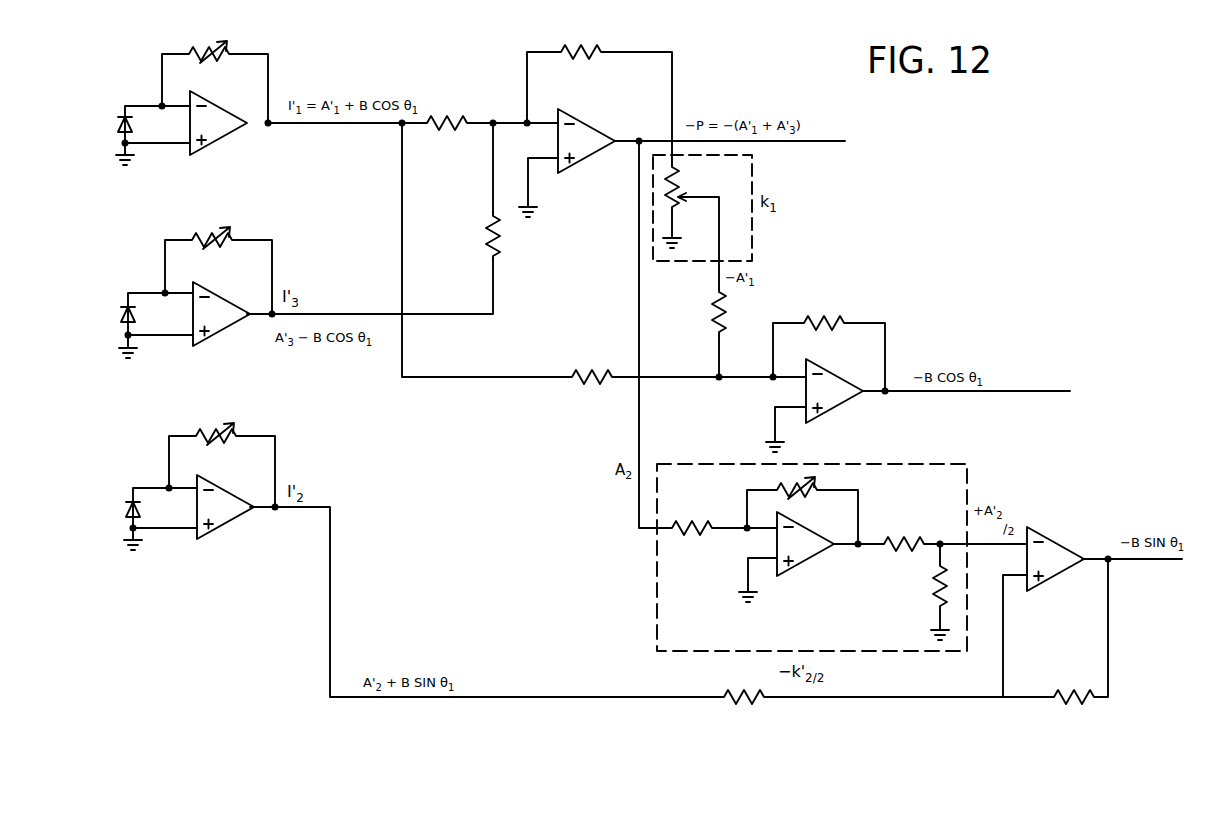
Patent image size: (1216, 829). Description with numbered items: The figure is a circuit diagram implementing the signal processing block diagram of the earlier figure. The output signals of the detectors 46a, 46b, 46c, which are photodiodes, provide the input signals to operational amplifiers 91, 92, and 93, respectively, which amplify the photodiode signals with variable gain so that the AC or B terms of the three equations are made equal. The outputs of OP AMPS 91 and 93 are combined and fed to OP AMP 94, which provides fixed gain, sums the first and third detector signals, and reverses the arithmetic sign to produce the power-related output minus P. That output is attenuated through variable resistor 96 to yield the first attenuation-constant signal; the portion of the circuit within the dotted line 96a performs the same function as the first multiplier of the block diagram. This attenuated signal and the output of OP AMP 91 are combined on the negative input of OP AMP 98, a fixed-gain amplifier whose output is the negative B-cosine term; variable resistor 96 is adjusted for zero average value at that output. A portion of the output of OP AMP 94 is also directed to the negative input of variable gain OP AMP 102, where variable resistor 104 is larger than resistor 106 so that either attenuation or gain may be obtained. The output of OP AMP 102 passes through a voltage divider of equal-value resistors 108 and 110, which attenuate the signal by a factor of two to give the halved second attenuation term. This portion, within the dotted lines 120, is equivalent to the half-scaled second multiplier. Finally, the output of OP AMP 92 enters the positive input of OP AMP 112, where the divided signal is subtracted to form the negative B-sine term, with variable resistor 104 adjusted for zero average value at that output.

The detector 46a is at (118, 117).
The detector 46b is at (123, 510).
The detector 46c is at (120, 320).
The operational amplifier 91 is at (220, 130).
The operational amplifier 92 is at (220, 510).
The operational amplifier 93 is at (227, 318).
The operational amplifier 94 is at (590, 140).
The variable resistor 96 is at (677, 177).
The dotted line 96a is at (763, 230).
The operational amplifier 98 is at (838, 393).
The variable gain operational amplifier 102 is at (805, 552).
The variable resistor 104 is at (782, 483).
The resistor 106 is at (683, 520).
The resistor 108 is at (893, 537).
The resistor 110 is at (933, 597).
The operational amplifier 112 is at (1060, 555).
The dotted lines 120 is at (672, 572).